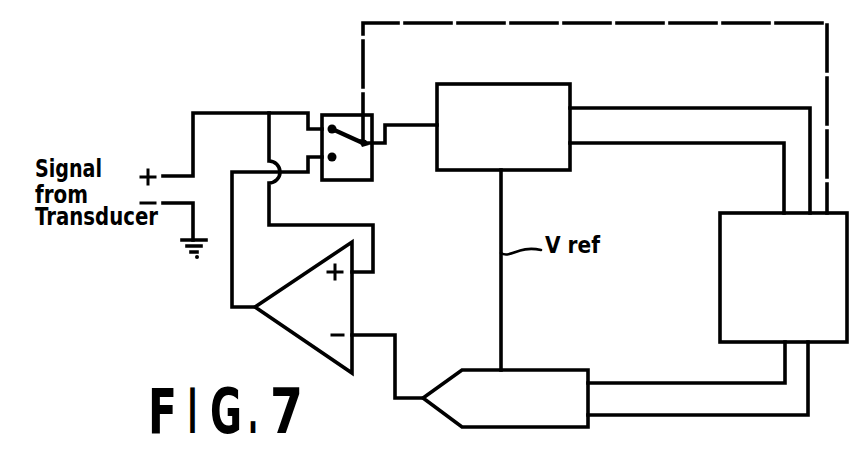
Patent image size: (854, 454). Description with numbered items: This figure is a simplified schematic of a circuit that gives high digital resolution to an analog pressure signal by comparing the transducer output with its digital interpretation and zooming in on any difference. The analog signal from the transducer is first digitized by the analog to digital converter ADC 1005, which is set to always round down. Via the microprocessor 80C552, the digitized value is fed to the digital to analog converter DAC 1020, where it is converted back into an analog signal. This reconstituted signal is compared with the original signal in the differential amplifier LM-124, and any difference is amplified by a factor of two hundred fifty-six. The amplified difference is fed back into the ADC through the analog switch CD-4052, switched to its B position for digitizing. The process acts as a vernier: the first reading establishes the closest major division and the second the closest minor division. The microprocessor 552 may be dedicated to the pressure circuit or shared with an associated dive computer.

The analog switch 4052 is at (338, 113).
The analog to digital converter 1005 is at (503, 127).
The differential amplifier 124 is at (303, 307).
The digital to analog converter 1020 is at (505, 398).
The microprocessor 80C552 is at (783, 277).
The microprocessor 552 is at (783, 277).